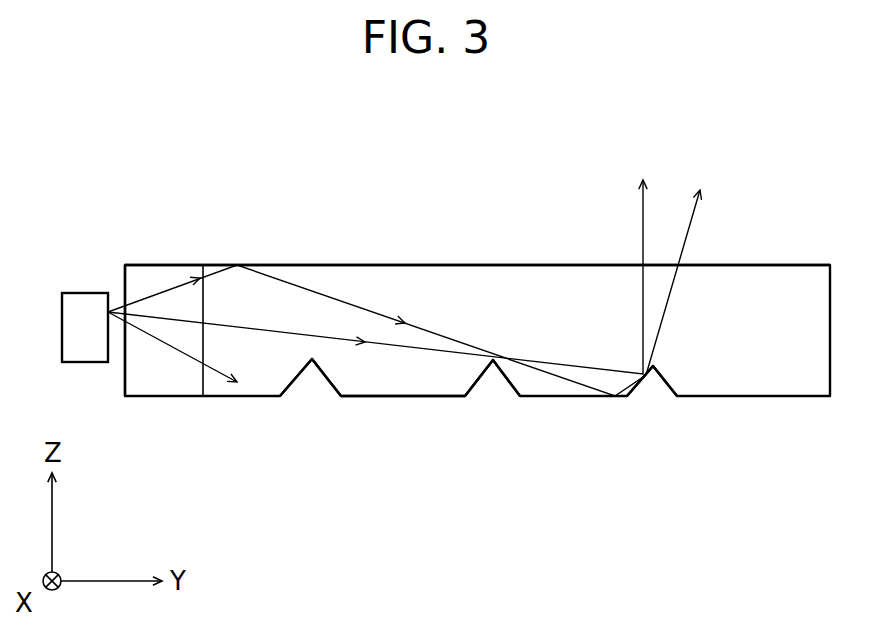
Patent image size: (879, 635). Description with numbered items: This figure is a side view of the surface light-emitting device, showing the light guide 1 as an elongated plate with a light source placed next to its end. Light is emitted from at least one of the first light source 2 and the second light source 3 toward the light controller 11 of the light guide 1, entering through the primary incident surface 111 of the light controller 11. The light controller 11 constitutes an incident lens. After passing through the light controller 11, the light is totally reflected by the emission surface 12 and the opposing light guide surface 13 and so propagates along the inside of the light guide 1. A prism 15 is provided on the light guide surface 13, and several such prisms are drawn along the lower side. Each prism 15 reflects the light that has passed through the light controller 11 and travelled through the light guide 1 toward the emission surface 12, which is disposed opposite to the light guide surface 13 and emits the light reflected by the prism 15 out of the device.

The light guide 1 is at (320, 255).
The first light source 2 is at (80, 293).
The second light source 3 is at (85, 276).
The light controller 11 is at (162, 262).
The emission surface 12 is at (453, 264).
The light guide surface 13 is at (417, 396).
The prism 15 is at (294, 380).
The primary incident surface 111 is at (198, 382).